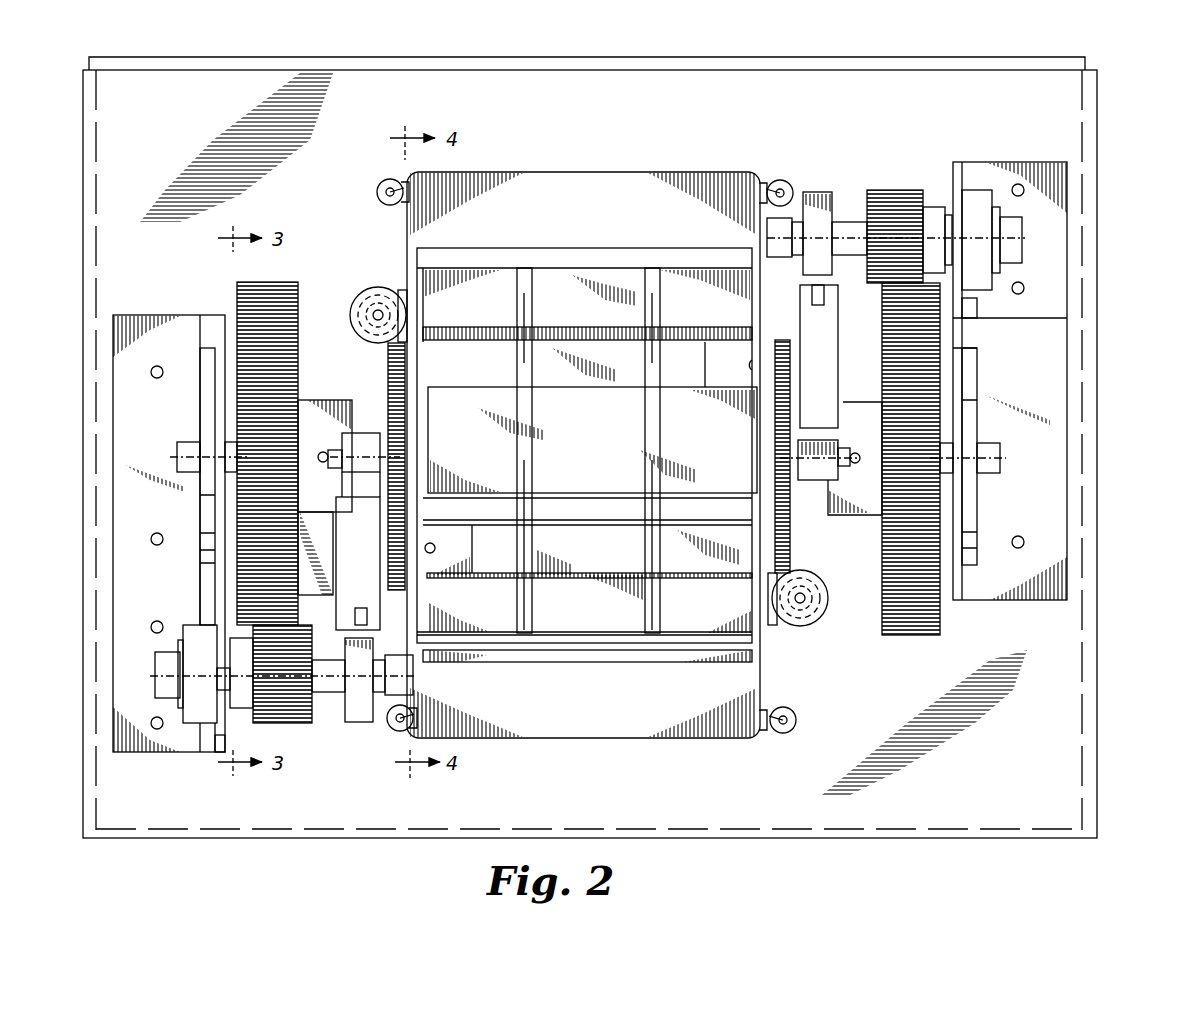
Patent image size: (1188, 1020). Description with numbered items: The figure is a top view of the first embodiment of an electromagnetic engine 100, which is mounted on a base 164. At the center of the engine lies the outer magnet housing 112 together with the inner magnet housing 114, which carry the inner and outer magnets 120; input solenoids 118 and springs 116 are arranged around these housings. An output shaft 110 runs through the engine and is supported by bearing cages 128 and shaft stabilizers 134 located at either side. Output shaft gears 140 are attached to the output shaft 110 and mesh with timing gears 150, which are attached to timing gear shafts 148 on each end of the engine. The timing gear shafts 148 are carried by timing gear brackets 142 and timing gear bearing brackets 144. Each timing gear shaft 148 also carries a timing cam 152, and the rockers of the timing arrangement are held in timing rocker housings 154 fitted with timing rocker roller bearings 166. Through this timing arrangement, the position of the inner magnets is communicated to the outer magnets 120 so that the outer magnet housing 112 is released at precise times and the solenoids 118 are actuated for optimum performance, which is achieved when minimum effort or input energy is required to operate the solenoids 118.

The electromagnetic engine 100 is at (1128, 288).
The output shaft 110 is at (185, 442).
The outer magnet housing 112 is at (612, 226).
The inner magnet housing 114 is at (646, 314).
The springs 116 is at (378, 186).
The input solenoids 118 is at (350, 306).
The magnets 120 is at (612, 449).
The bearing cages 128 is at (200, 362).
The shaft stabilizers 134 is at (200, 590).
The output shaft gears 140 is at (290, 282).
The timing gear brackets 142 is at (968, 307).
The timing gear bearing brackets 144 is at (197, 724).
The timing gear shafts 148 is at (165, 699).
The timing gears 150 is at (293, 724).
The timing cams 152 is at (360, 723).
The timing rocker housings 154 is at (330, 400).
The base 164 is at (463, 58).
The timing rocker roller bearings 166 is at (355, 617).